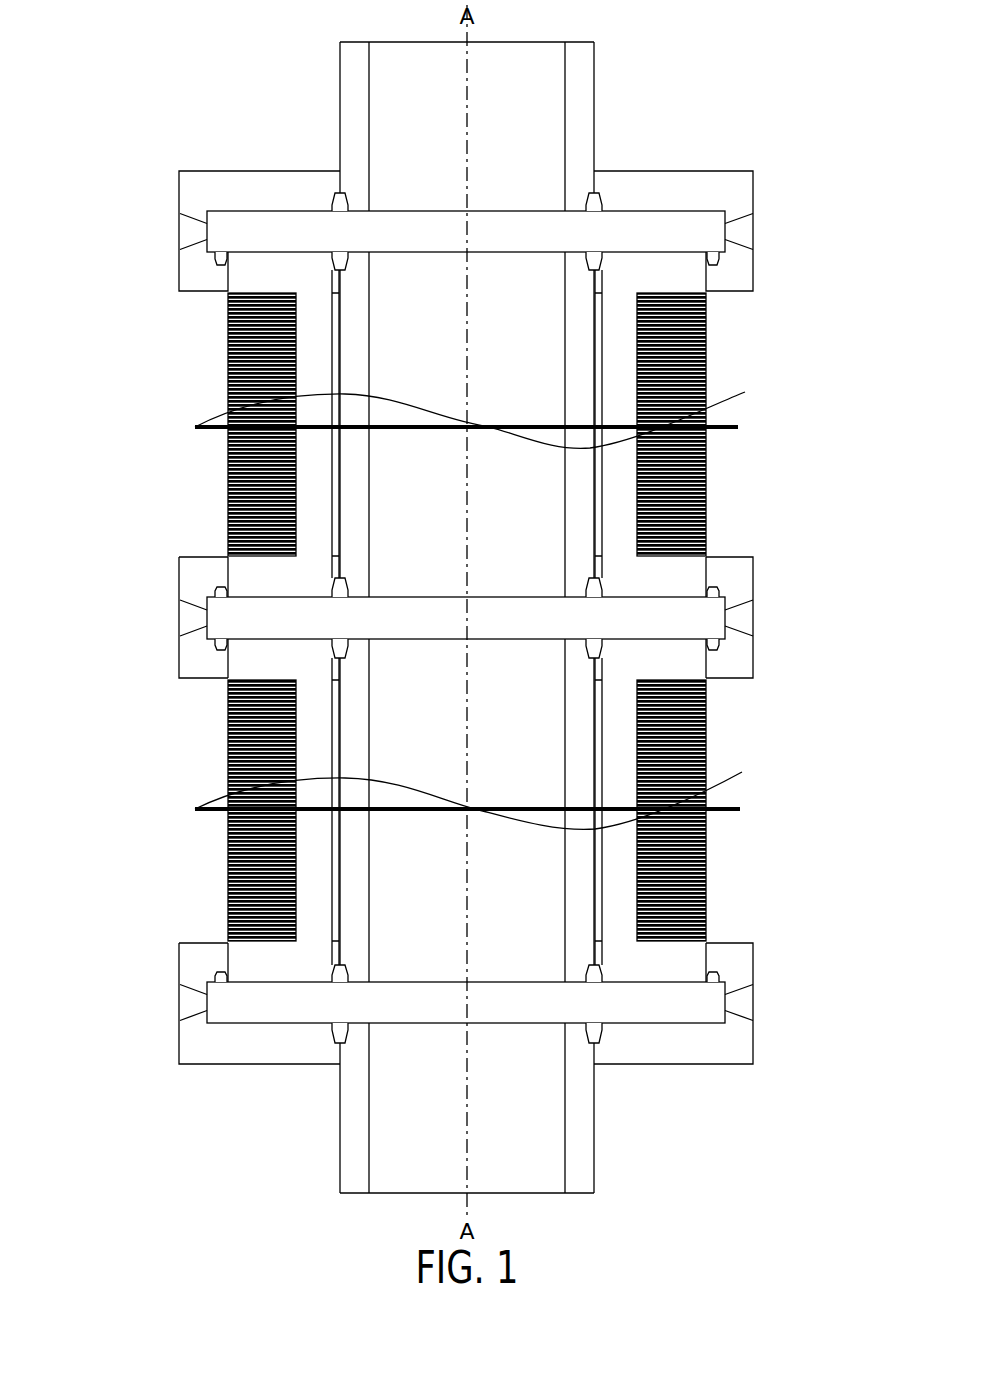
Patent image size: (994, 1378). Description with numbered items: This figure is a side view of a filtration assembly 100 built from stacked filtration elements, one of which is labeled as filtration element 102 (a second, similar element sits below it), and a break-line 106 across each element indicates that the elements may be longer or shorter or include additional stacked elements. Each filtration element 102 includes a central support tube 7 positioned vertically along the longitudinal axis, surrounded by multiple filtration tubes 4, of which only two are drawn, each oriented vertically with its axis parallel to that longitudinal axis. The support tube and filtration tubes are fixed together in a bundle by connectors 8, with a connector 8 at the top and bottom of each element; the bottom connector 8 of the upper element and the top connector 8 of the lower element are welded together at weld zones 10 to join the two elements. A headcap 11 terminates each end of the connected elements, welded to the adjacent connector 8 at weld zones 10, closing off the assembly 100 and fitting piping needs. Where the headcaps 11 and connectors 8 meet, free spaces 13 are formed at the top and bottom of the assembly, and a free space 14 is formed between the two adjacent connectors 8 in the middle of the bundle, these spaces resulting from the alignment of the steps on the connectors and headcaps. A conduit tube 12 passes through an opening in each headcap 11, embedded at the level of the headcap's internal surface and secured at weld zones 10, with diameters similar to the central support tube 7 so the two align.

The filtration assembly 100 is at (708, 70).
The filtration element 102 is at (117, 231).
The filtration tubes 4 is at (255, 497).
The central support tube 7 is at (540, 513).
The connectors 8 is at (200, 276).
The weld zones 10 is at (337, 262).
The headcap 11 is at (705, 188).
The conduit tube 12 is at (357, 65).
The free spaces 13 is at (398, 225).
The free space 14 is at (496, 628).
The break-line 106 is at (745, 393).